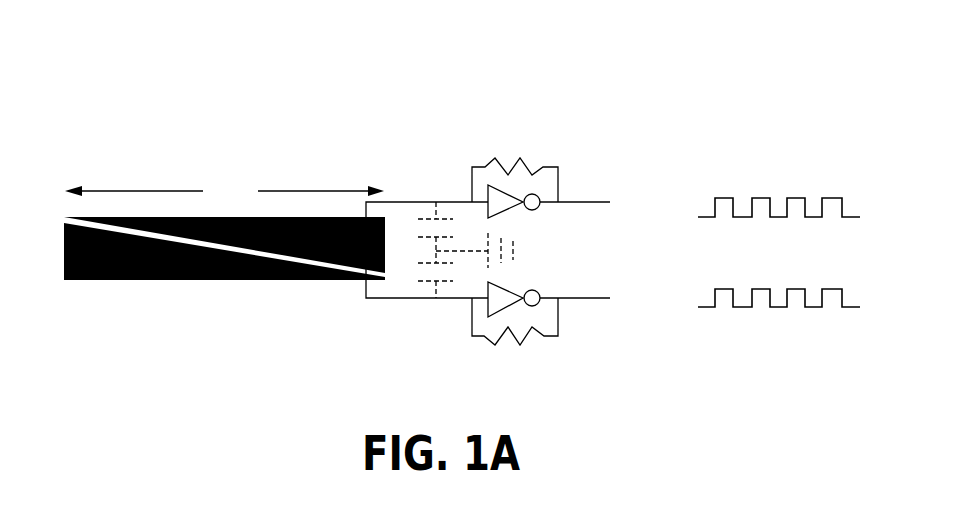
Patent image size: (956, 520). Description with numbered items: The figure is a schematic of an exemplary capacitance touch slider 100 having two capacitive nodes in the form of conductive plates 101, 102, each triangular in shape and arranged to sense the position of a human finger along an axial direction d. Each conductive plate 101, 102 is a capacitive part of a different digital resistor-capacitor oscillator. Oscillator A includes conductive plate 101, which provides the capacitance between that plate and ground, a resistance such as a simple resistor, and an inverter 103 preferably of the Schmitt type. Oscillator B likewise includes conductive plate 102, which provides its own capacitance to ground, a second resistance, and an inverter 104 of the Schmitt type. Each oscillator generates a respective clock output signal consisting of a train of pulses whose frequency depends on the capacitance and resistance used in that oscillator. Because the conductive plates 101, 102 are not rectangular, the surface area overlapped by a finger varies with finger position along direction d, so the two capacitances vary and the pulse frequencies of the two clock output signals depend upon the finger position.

The capacitance touch slider 100 is at (463, 98).
The conductive plate 101 is at (268, 217).
The conductive plate 102 is at (175, 280).
The inverter 103 is at (505, 212).
The inverter 104 is at (505, 285).